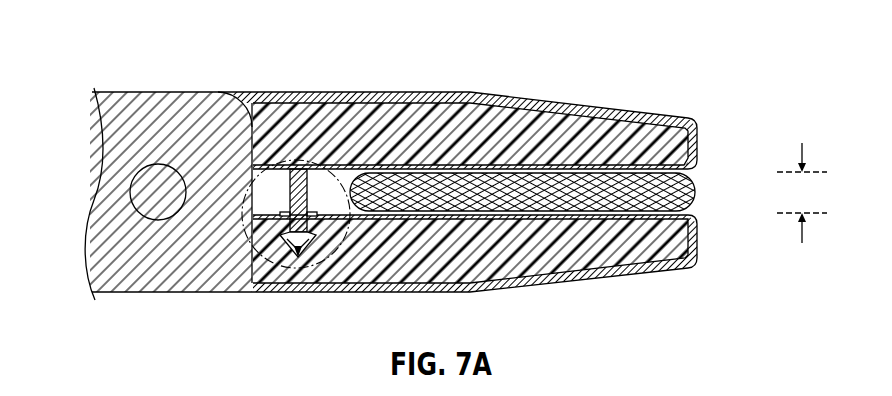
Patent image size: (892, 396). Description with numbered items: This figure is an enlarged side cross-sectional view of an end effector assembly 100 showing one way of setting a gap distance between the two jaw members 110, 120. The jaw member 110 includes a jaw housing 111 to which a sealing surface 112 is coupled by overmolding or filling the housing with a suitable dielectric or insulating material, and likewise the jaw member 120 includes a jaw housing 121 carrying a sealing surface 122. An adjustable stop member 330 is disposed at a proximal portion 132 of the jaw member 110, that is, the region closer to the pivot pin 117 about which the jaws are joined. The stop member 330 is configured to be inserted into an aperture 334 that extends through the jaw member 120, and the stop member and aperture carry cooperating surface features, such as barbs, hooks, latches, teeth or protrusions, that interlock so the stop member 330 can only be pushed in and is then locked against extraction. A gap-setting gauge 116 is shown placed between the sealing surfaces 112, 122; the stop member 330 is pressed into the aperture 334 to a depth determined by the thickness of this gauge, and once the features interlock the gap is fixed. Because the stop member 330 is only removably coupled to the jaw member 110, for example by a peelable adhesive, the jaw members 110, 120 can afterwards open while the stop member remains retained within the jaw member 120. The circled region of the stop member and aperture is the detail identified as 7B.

The surgical instrument / jaw assembly 100 is at (446, 198).
The jaw member 110 is at (446, 198).
The jaw housing 111 is at (610, 110).
The sealing surface 112 is at (552, 168).
The gap-setting gauge 116 is at (688, 196).
The pivot pin 117 is at (158, 185).
The jaw member 120 is at (446, 198).
The jaw housing 121 is at (592, 277).
The sealing surface 122 is at (500, 213).
The proximal portion 132 is at (308, 137).
The adjustable stop member 330 is at (338, 256).
The aperture 334 is at (298, 255).
The detail view callout 7B is at (245, 212).